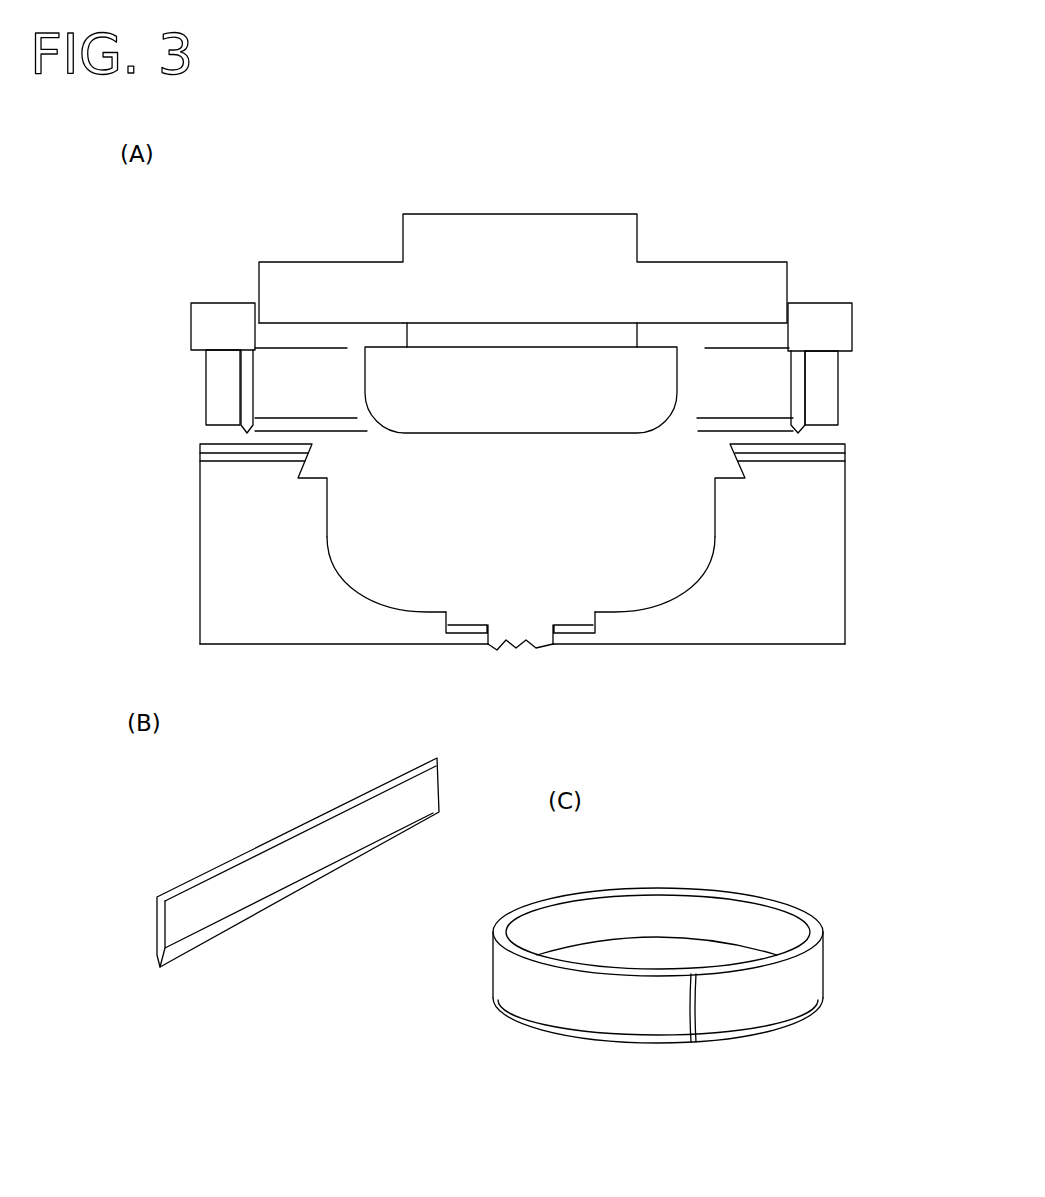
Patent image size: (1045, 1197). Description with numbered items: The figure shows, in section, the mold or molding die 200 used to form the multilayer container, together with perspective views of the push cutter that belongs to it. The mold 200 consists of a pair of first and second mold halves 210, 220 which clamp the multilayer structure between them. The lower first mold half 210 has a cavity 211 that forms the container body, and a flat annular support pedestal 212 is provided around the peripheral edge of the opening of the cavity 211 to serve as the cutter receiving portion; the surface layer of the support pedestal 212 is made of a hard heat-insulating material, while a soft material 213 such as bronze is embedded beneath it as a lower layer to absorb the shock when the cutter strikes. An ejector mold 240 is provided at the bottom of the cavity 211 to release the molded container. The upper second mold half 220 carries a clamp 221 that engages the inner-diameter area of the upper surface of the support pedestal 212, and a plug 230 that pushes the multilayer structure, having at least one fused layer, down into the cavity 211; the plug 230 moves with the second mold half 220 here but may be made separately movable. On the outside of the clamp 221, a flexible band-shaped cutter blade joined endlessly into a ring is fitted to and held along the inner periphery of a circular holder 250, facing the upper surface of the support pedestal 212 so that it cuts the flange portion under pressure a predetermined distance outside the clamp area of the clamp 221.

The mold 200 is at (725, 232).
The second mold half 220 is at (787, 275).
The clamp 221 is at (337, 320).
The plug 230 is at (677, 387).
The holder 250 is at (206, 368).
The first mold half 210 is at (833, 562).
The cavity 211 is at (662, 595).
The support pedestal 212 is at (213, 442).
The soft material 213 is at (243, 462).
The ejector mold 240 is at (530, 622).